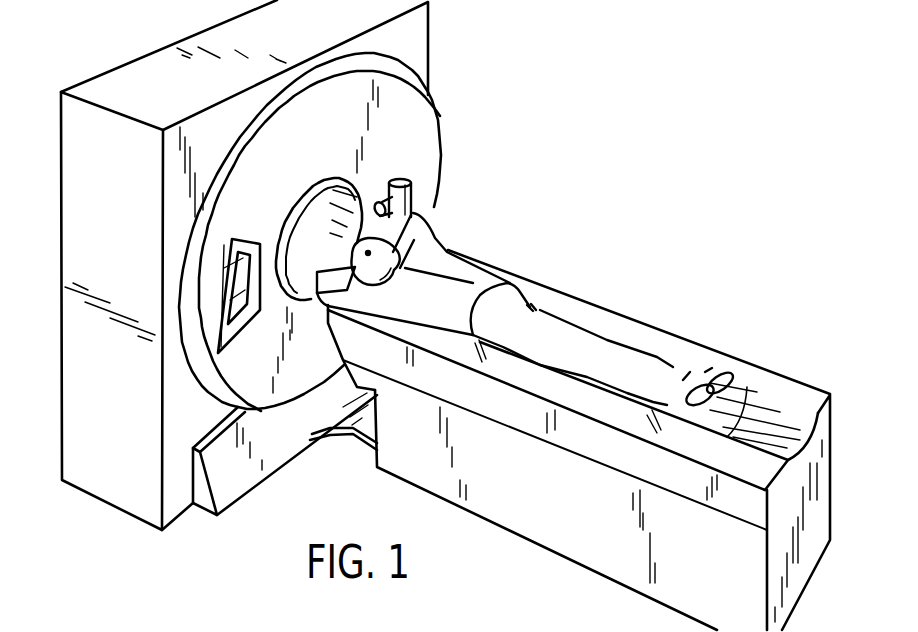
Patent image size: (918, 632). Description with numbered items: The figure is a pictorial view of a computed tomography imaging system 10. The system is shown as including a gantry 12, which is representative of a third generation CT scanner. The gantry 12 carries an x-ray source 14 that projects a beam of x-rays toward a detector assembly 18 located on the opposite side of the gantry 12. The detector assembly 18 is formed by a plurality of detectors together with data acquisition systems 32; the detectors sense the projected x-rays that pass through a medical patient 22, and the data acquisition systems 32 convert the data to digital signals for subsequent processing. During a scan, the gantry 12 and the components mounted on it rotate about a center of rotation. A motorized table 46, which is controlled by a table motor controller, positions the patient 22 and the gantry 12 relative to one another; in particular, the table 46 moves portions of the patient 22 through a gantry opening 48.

The computed tomography (CT) imaging system 10 is at (550, 128).
The gantry 12 is at (419, 144).
The x-ray source 14 is at (413, 198).
The detector assembly 18 is at (244, 324).
The medical patient 22 is at (469, 277).
The data acquisition systems (DAS) 32 is at (253, 240).
The motorized table 46 is at (560, 548).
The gantry opening 48 is at (305, 226).